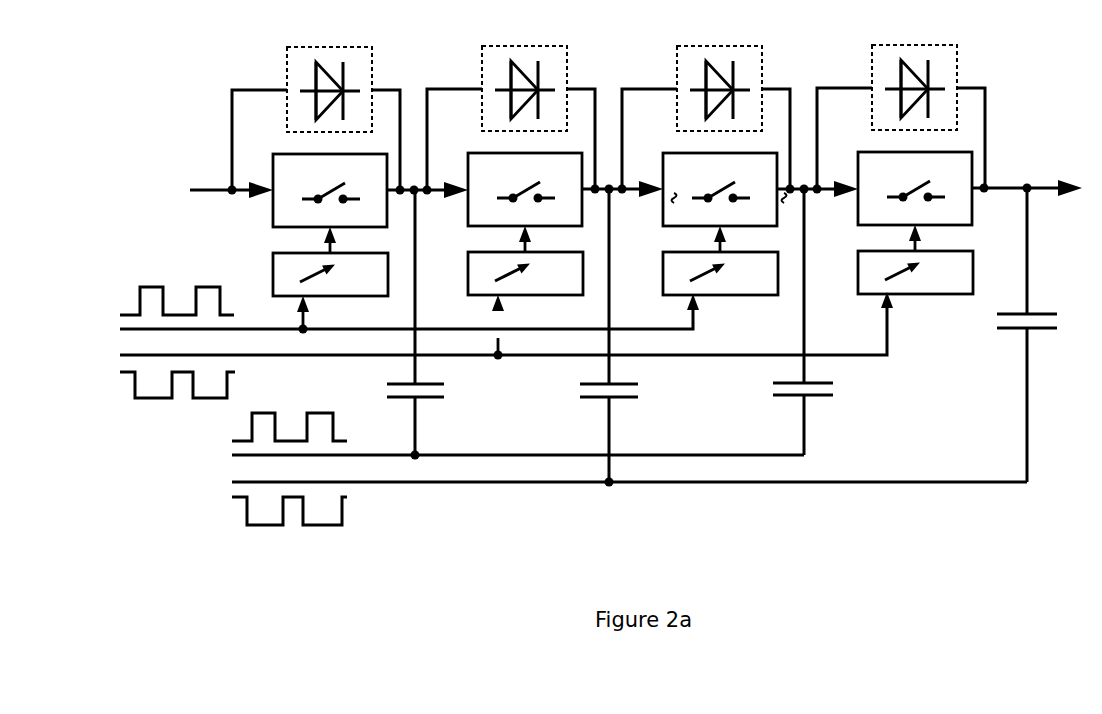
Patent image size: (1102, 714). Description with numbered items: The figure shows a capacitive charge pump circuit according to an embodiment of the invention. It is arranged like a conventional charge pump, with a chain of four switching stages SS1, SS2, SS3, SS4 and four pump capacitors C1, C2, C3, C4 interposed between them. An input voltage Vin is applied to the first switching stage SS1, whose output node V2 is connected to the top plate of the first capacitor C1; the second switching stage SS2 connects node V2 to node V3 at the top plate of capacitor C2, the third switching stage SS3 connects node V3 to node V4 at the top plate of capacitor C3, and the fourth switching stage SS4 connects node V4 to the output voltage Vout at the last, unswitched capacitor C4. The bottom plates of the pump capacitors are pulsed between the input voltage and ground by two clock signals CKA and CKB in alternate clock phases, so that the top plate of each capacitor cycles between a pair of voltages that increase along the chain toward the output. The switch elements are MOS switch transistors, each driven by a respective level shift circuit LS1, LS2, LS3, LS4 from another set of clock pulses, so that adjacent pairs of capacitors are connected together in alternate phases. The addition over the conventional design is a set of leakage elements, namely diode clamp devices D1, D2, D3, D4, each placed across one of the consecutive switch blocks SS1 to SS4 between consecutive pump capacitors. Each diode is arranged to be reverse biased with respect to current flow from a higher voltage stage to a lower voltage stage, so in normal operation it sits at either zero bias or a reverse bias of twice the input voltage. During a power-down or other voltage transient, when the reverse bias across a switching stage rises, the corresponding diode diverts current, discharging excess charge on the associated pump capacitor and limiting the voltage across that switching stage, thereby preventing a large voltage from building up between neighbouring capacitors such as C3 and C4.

The diode clamp device D1 is at (321, 114).
The diode clamp device D2 is at (516, 113).
The diode clamp device D3 is at (711, 113).
The diode clamp device D4 is at (906, 112).
The switching stage SS1 is at (330, 190).
The switching stage SS2 is at (525, 189).
The switching stage SS3 is at (725, 189).
The switching stage SS4 is at (915, 188).
The level shift circuit LS1 is at (330, 261).
The level shift circuit LS2 is at (525, 260).
The level shift circuit LS3 is at (720, 260).
The level shift circuit LS4 is at (915, 259).
The pump capacitor C1 is at (437, 322).
The pump capacitor C2 is at (625, 335).
The pump capacitor C3 is at (818, 322).
The pump capacitor C4 is at (1042, 335).
The input voltage Vin is at (231, 200).
The stage voltage node V2 is at (427, 204).
The stage voltage node V3 is at (622, 203).
The stage voltage node V4 is at (817, 203).
The output voltage Vout is at (1030, 203).
The clock signal CKA is at (462, 375).
The clock signal CKB is at (573, 408).